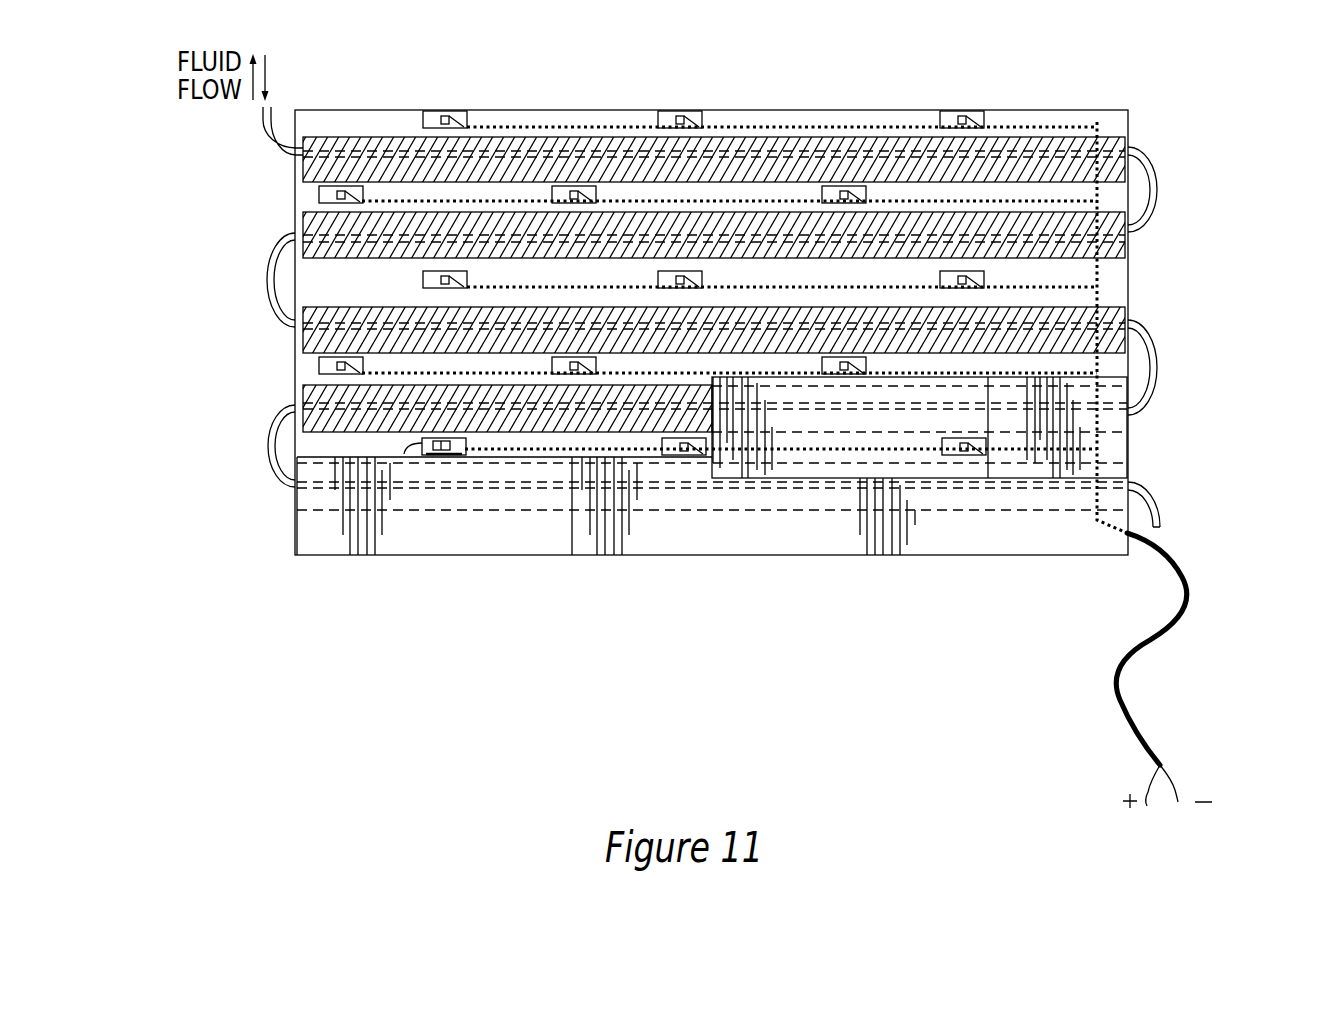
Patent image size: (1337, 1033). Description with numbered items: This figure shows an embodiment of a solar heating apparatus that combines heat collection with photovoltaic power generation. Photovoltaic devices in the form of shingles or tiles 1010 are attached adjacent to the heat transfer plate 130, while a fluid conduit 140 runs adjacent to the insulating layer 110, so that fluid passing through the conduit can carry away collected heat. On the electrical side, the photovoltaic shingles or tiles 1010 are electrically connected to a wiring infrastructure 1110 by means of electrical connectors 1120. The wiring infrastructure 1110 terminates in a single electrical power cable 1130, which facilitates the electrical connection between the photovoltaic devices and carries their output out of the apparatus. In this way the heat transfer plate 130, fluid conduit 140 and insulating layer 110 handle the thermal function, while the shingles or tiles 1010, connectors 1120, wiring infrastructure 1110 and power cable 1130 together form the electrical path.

The insulating layer 110 is at (395, 107).
The heat transfer plate 130 is at (298, 205).
The fluid conduit 140 is at (1050, 137).
The photovoltaic shingles or tiles 1010 is at (935, 440).
The wiring infrastructure 1110 is at (1107, 283).
The electrical connectors 1120 is at (435, 466).
The electrical power cable 1130 is at (1195, 566).